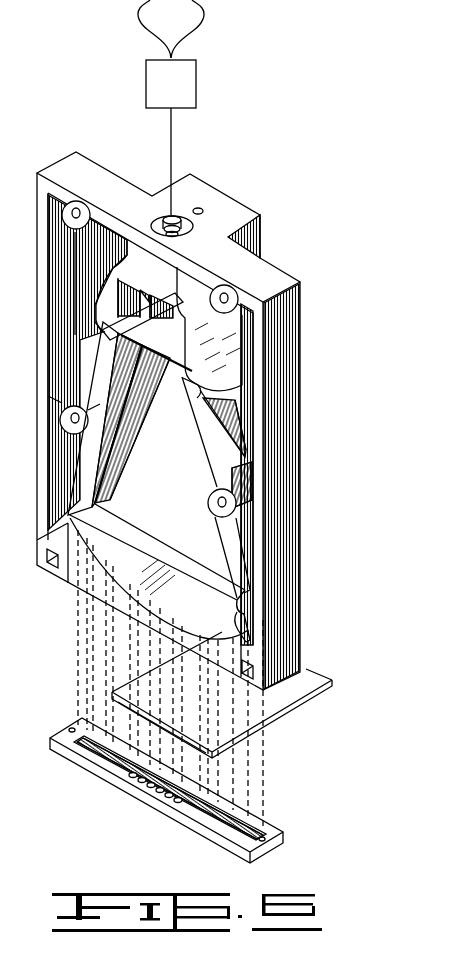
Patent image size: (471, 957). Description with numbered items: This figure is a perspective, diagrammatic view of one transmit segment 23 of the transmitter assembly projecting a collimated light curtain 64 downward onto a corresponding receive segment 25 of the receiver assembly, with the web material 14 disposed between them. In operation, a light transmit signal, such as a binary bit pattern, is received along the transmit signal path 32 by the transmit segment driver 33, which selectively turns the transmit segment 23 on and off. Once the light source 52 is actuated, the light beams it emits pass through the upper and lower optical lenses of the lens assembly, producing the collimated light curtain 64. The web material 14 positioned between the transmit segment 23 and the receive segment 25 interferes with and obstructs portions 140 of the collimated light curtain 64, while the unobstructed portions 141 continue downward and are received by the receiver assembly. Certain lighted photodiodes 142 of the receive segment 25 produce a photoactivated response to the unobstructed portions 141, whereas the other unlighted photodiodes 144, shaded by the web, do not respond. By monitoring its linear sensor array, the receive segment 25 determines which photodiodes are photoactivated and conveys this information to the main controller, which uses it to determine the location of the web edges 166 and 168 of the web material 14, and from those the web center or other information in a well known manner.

The web material 14 is at (313, 684).
The transmit segment 23 is at (303, 235).
The receive segment 25 is at (75, 783).
The transmit signal path 32 is at (155, 30).
The transmit segment driver 33 is at (198, 78).
The light source 52 is at (173, 216).
The collimated light curtain 64 is at (78, 620).
The obstructed portions 140 is at (177, 722).
The unobstructed portions 141 is at (230, 784).
The lighted photodiodes 142 is at (245, 820).
The unlighted photodiodes 144 is at (185, 805).
The web edge 166 is at (287, 706).
The web edge 168 is at (140, 668).